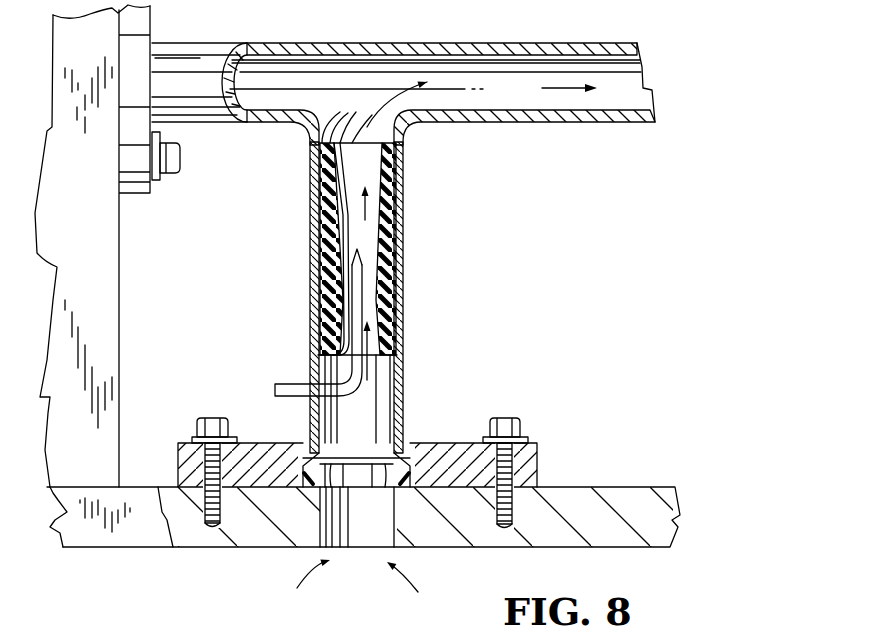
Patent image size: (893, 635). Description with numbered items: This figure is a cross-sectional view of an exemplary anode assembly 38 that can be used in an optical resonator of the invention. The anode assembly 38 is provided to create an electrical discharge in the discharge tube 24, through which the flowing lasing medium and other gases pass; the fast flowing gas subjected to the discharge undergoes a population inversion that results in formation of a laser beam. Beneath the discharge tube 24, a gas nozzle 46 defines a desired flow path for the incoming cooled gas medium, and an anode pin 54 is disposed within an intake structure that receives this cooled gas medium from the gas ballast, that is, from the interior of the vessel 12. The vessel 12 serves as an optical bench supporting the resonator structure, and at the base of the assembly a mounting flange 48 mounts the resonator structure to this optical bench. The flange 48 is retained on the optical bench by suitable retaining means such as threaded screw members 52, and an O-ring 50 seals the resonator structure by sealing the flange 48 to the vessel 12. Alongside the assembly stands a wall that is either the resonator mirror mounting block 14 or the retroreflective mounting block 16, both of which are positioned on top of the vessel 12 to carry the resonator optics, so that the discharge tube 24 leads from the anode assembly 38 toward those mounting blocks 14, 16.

The discharge tube 24 is at (533, 43).
The retroreflective mounting block 16 is at (147, 276).
The resonator mirror mounting block 14 is at (120, 277).
The vessel 12 is at (626, 487).
The mounting flange 48 is at (537, 462).
The threaded screw members 52 is at (215, 418).
The anode assembly 38 is at (528, 258).
The gas nozzle 46 is at (404, 233).
The anode pin 54 is at (284, 384).
The O-ring 50 is at (385, 488).